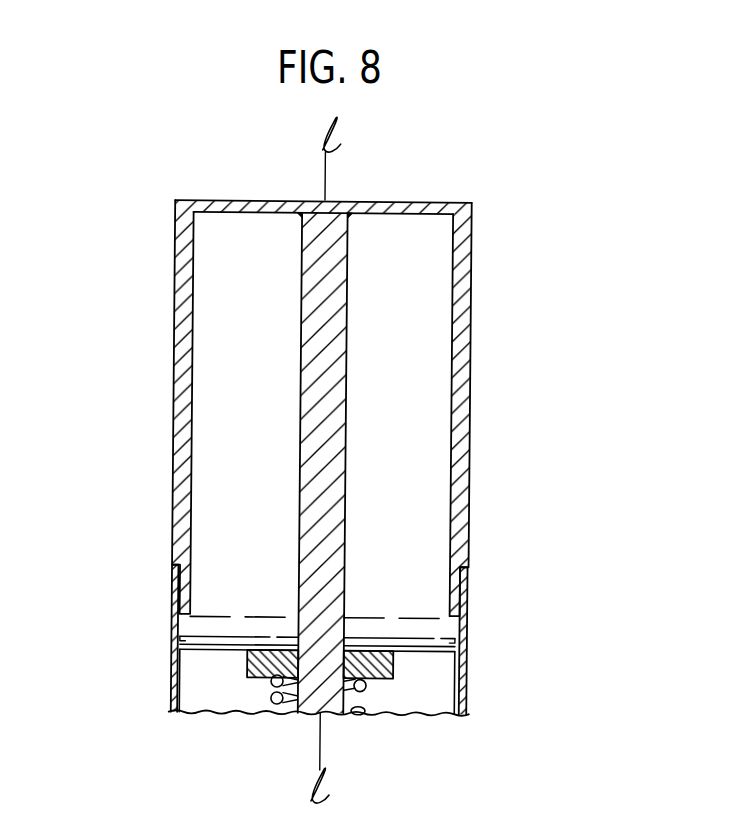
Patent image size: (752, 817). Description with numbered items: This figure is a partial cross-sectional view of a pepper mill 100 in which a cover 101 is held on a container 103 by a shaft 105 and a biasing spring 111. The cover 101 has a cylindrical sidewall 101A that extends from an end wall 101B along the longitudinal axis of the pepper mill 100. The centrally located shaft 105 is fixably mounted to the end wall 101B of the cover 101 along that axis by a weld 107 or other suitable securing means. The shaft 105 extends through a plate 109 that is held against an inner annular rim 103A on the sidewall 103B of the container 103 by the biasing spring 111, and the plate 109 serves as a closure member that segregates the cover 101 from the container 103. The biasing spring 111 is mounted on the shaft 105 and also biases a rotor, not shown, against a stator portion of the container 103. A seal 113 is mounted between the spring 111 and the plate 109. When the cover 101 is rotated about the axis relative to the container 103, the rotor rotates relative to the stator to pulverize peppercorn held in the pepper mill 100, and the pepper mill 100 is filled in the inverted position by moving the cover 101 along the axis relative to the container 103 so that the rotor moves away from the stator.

The pepper mill 100 is at (505, 241).
The cover 101 is at (315, 384).
The cylindrical sidewall 101A is at (182, 333).
The end wall 101B is at (413, 207).
The container 103 is at (314, 665).
The inner annular rim 103A is at (178, 639).
The sidewall 103B is at (177, 699).
The shaft 105 is at (322, 383).
The weld 107 is at (298, 217).
The plate 109 is at (415, 646).
The biasing spring 111 is at (279, 707).
The seal 113 is at (259, 666).